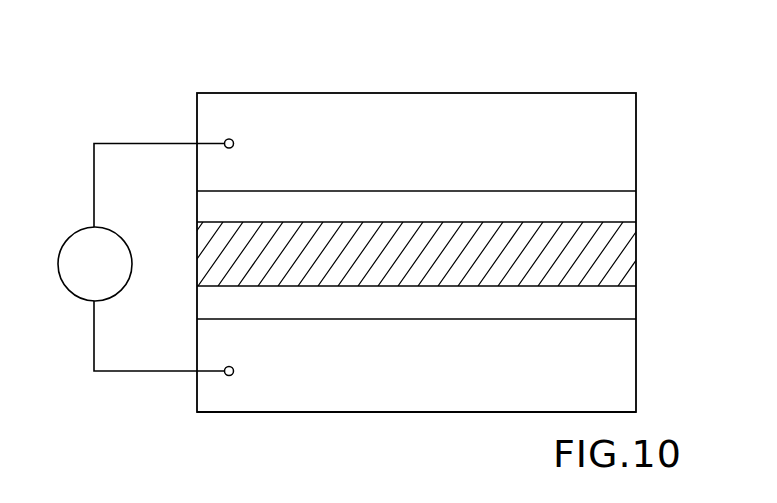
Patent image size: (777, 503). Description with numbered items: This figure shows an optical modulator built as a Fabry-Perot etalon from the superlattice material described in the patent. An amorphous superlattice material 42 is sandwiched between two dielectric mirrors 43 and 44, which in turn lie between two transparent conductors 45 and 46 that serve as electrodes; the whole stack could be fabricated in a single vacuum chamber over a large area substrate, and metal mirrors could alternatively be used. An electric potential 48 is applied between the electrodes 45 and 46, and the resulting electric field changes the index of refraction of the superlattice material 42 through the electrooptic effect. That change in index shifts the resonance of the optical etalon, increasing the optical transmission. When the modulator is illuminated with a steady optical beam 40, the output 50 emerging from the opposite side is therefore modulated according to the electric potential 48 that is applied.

The optical beam 40 is at (420, 14).
The amorphous superlattice material 42 is at (637, 270).
The dielectric mirror 43 is at (637, 214).
The dielectric mirror 44 is at (637, 306).
The transparent conductor 45 is at (637, 158).
The transparent conductor 46 is at (637, 370).
The electric potential 48 is at (75, 298).
The output 50 is at (403, 405).